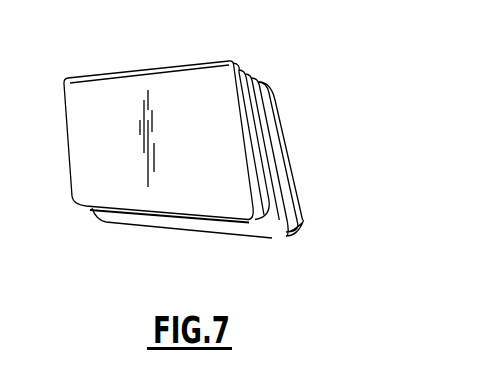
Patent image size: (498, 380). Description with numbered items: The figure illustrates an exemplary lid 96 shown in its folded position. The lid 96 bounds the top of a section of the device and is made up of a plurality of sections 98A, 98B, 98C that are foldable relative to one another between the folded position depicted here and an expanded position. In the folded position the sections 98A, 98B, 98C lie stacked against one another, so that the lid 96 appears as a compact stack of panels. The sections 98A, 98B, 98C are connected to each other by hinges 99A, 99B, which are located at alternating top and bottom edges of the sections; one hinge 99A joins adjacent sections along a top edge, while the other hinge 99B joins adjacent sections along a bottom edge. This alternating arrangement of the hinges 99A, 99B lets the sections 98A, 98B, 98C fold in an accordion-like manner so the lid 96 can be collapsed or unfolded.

The hinge 99A is at (233, 61).
The hinge 99B is at (300, 237).
The section 98A is at (256, 212).
The section 98B is at (279, 199).
The section 98C is at (289, 187).
The lid 96 is at (299, 143).